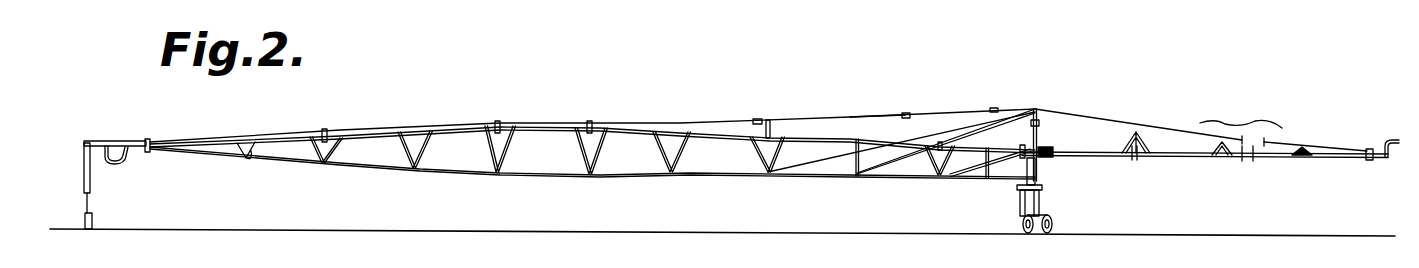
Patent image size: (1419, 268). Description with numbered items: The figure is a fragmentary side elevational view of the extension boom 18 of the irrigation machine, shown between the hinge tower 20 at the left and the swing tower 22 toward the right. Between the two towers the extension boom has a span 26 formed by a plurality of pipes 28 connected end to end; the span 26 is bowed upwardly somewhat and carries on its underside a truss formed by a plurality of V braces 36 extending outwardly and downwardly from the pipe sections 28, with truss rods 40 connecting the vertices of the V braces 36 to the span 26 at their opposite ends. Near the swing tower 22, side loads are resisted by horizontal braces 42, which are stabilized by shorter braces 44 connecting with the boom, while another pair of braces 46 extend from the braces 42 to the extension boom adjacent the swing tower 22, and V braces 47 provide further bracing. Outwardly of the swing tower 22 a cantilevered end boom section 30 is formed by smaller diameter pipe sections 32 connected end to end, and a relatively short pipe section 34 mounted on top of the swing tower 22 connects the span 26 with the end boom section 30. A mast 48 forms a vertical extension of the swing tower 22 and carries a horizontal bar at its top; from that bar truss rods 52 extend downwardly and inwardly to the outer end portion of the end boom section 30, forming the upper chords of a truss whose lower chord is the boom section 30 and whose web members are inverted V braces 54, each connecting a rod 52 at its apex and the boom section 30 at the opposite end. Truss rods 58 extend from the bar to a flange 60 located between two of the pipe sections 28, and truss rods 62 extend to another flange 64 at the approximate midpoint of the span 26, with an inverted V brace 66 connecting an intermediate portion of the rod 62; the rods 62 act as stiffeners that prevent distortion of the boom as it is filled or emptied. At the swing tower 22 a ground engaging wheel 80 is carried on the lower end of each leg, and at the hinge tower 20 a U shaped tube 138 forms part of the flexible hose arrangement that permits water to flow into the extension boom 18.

The extension boom 18 is at (715, 97).
The hinge tower 20 is at (102, 213).
The swing tower 22 is at (1069, 226).
The span 26 is at (557, 119).
The pipes 28 is at (292, 131).
The cantilevered end boom section 30 is at (1182, 158).
The pipe sections 32 is at (1183, 150).
The short pipe section 34 is at (1050, 144).
The V braces 36 is at (250, 157).
The truss rods 40 is at (543, 177).
The horizontal braces 42 is at (877, 178).
The shorter braces 44 is at (853, 148).
The braces 46 is at (987, 171).
The V braces 47 is at (936, 178).
The mast 48 is at (1040, 123).
The truss rods 52 is at (1113, 128).
The inverted V braces 54 is at (1147, 142).
The truss rods 58 is at (1003, 122).
The flange 60 is at (940, 143).
The truss rods 62 is at (887, 118).
The flange 64 is at (598, 127).
The inverted V brace 66 is at (777, 123).
The ground engaging wheel 80 is at (1040, 233).
The U shaped tube 138 is at (131, 160).